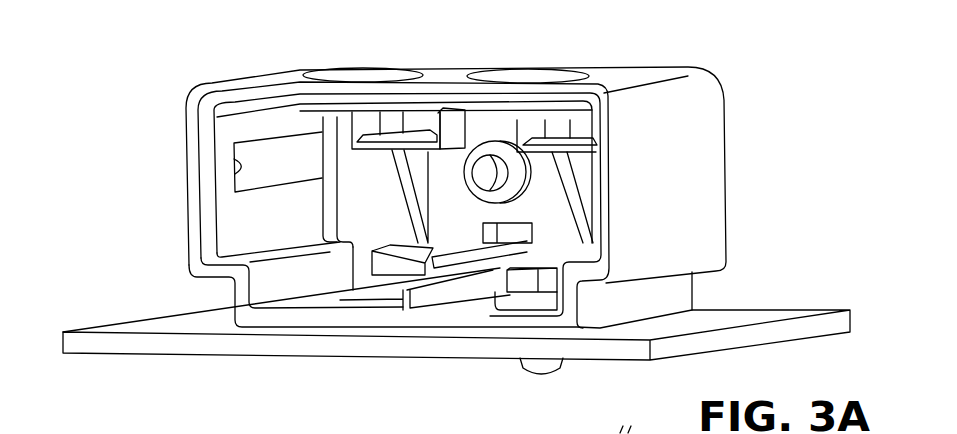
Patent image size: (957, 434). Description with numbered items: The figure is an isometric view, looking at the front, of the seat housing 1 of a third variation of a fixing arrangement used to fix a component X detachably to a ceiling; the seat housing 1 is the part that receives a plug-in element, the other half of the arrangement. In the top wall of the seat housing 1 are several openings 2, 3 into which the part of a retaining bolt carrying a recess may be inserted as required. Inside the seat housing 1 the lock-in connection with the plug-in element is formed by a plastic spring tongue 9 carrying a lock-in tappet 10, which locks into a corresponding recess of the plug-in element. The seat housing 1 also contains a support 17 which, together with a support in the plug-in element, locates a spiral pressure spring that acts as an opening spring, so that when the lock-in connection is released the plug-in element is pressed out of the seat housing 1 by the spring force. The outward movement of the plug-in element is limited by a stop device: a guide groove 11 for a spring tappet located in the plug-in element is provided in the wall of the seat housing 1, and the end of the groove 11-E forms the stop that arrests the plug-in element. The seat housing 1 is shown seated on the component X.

The seat housing 1 is at (765, 152).
The opening 2 is at (527, 77).
The opening 3 is at (368, 75).
The plastic spring tongue 9 is at (453, 263).
The lock-in tappet 10 is at (375, 252).
The guide groove 11 is at (258, 150).
The end of the groove 11-E is at (238, 170).
The support 17 is at (517, 172).
The component X is at (130, 347).